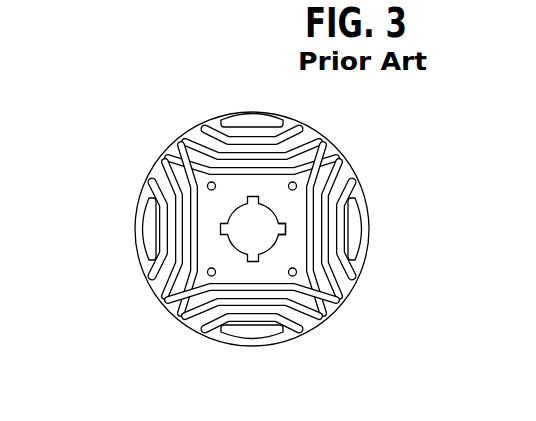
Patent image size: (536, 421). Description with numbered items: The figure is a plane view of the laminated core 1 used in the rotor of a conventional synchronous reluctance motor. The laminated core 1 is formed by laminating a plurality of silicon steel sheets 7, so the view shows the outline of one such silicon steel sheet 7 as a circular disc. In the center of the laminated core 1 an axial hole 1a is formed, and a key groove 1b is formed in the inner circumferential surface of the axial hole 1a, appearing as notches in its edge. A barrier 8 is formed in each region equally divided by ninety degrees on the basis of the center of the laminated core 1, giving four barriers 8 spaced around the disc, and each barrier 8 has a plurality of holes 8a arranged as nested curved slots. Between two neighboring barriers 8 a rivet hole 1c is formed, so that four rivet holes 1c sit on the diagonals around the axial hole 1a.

The laminated core 1 is at (369, 163).
The axial hole 1a is at (276, 238).
The key groove 1b is at (270, 243).
The rivet hole 1c is at (207, 187).
The silicon steel sheet 7 is at (328, 148).
The barrier 8 is at (145, 234).
The holes 8a is at (212, 157).